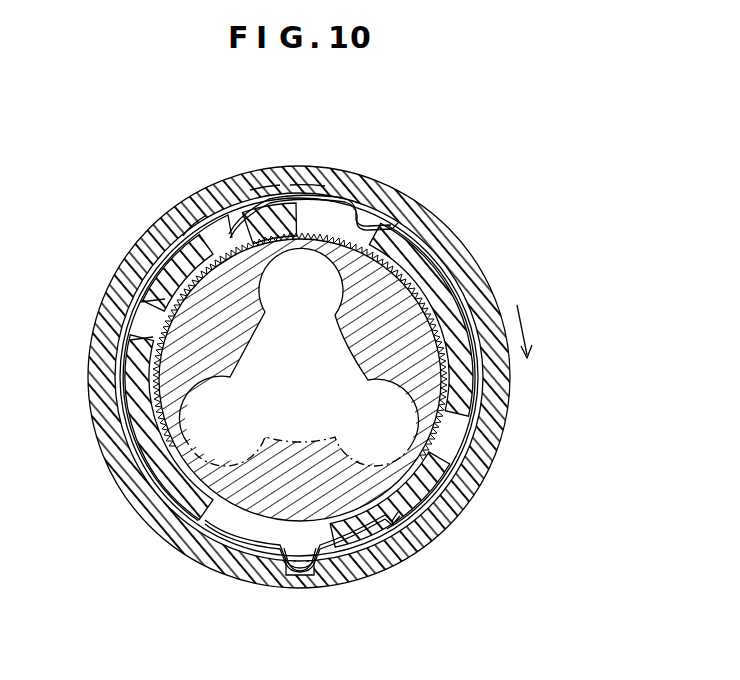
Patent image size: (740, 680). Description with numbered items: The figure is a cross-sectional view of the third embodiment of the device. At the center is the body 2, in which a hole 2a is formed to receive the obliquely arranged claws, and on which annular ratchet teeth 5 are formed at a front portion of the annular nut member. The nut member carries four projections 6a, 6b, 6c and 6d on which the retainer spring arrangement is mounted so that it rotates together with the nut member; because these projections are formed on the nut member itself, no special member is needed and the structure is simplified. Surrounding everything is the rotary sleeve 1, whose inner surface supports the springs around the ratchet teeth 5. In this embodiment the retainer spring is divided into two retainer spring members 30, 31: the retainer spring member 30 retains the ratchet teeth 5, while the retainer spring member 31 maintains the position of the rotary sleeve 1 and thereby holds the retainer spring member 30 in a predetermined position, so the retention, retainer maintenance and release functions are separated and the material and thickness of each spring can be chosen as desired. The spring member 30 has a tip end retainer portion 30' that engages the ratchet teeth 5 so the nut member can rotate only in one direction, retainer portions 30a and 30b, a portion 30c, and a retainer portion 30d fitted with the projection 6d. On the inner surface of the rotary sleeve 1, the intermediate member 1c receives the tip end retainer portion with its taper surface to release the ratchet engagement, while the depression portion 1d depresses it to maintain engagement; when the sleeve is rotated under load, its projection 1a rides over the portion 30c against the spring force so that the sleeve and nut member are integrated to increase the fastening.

The rotary sleeve 1 is at (490, 283).
The projection 1a is at (338, 583).
The intermediate member 1c is at (312, 176).
The depression portion 1d is at (262, 180).
The body 2 is at (430, 388).
The hole 2a is at (264, 302).
The ratchet teeth 5 is at (122, 338).
The projection 6a is at (432, 250).
The projection 6b is at (455, 515).
The projection 6c is at (170, 522).
The projection 6d is at (143, 256).
The retainer spring member 30 is at (299, 358).
The tip end retainer portion 30' is at (209, 188).
The retainer portion 30a is at (392, 195).
The retainer portion 30b is at (408, 555).
The projection portion 30c is at (266, 580).
The retainer portion 30d is at (195, 215).
The retainer spring member 31 is at (118, 305).